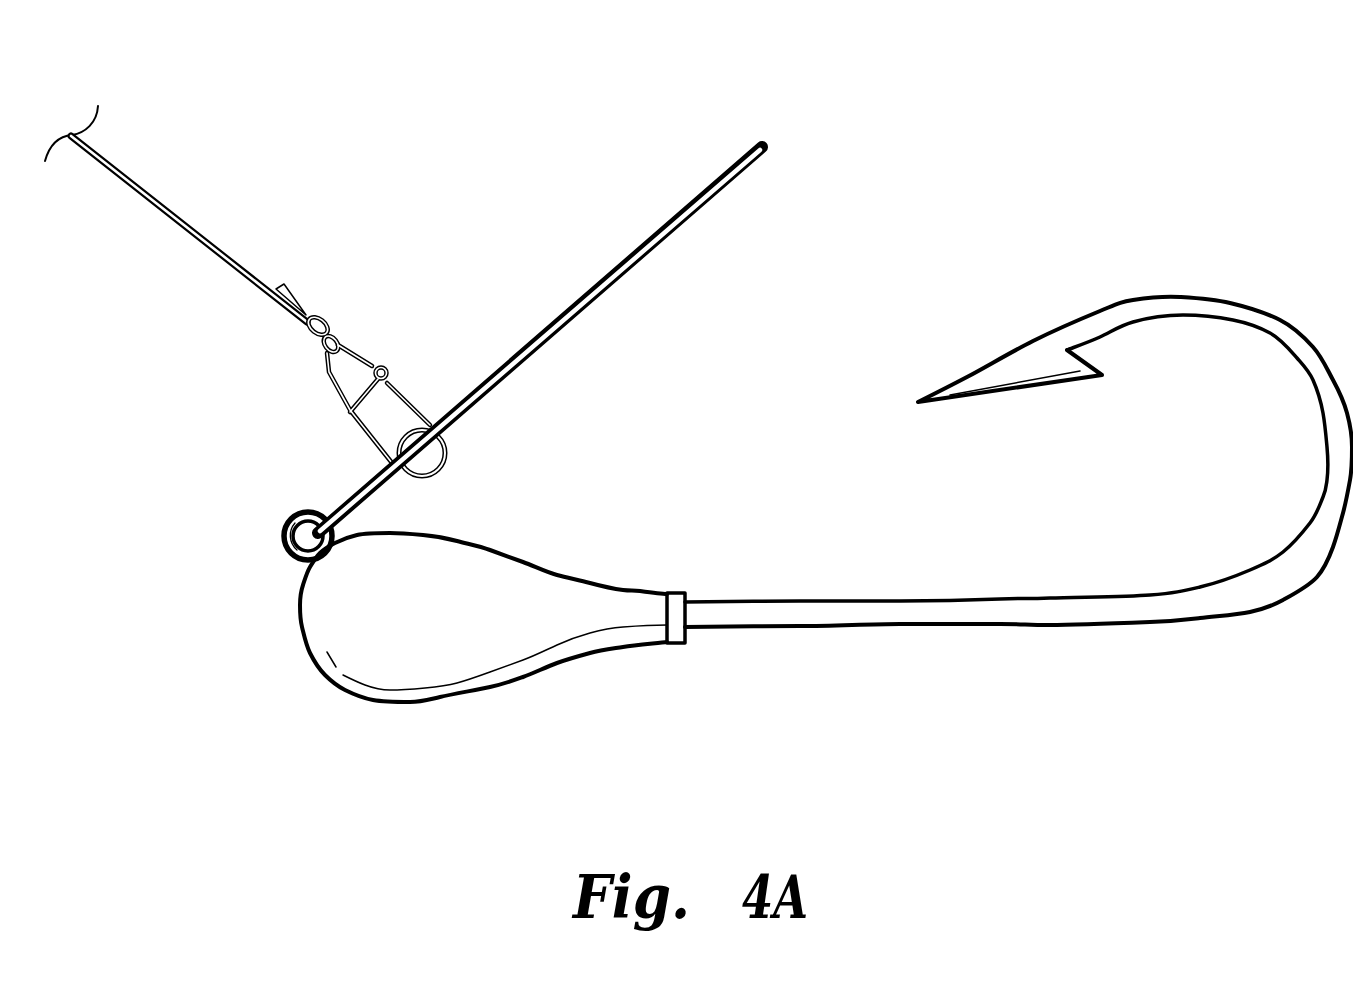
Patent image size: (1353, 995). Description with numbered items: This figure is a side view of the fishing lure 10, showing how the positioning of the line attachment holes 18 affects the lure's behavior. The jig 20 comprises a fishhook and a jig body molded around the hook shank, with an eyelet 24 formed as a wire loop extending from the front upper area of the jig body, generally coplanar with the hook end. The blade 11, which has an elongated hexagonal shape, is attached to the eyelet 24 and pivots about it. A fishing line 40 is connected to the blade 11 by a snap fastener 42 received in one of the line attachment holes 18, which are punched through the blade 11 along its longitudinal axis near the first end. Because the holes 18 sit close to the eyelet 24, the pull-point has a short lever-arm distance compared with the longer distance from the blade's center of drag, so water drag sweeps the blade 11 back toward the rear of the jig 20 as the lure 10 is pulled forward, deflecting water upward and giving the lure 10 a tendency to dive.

The fishing lure 10 is at (986, 208).
The blade 11 is at (683, 208).
The line attachment holes 18 is at (393, 467).
The jig 20 is at (622, 647).
The eyelet 24 is at (288, 545).
The fishing line 40 is at (192, 223).
The snap fastener 42 is at (327, 376).